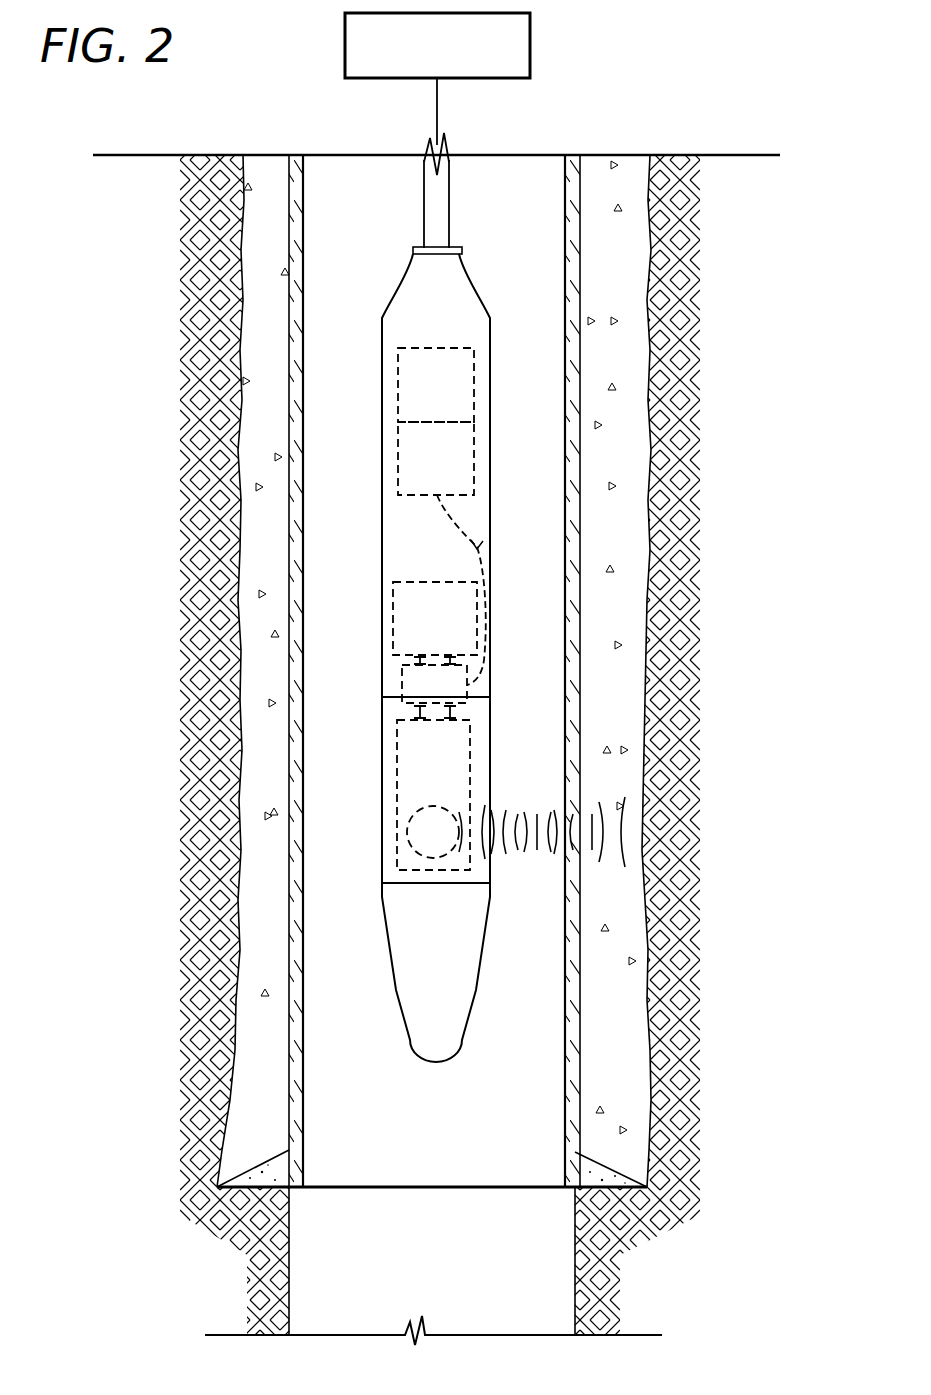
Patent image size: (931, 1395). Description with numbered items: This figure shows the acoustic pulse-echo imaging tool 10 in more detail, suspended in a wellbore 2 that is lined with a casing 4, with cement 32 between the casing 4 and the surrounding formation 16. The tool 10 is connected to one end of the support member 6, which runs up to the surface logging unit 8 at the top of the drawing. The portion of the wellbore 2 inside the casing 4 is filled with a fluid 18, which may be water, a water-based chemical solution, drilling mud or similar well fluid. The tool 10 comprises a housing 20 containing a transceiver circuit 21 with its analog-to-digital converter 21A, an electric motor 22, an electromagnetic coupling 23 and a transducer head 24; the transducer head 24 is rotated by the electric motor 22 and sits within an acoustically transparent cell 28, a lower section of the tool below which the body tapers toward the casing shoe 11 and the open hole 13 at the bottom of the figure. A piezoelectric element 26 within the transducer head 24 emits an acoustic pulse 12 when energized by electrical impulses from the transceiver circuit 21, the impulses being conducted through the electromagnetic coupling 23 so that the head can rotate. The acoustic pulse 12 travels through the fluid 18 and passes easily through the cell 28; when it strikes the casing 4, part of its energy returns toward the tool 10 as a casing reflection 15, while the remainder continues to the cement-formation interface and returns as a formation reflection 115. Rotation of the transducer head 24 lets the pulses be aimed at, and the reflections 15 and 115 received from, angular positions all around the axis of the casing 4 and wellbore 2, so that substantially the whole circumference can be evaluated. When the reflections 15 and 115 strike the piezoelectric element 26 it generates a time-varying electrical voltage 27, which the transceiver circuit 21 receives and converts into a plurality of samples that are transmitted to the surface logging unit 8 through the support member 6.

The wellbore 2 is at (262, 627).
The casing 4 is at (295, 748).
The support member 6 is at (449, 205).
The surface logging unit 8 is at (530, 50).
The tool 10 is at (442, 654).
The casing shoe 11 is at (255, 1175).
The acoustic pulse 12 is at (510, 840).
The open hole section 13 is at (326, 1285).
The casing reflection 15 is at (505, 816).
The formation 16 is at (200, 420).
The fluid 18 is at (332, 990).
The housing 20 is at (385, 310).
The transceiver circuit 21 is at (405, 463).
The analog to digital converter 21A is at (404, 385).
The electric motor 22 is at (393, 599).
The electromagnetic coupling 23 is at (400, 690).
The transducer head 24 is at (398, 788).
The piezoelectric element 26 is at (415, 852).
The time-varying electrical voltage 27 is at (492, 546).
The acoustically transparent cell 28 is at (490, 728).
The cement 32 is at (267, 247).
The formation reflection 115 is at (618, 835).